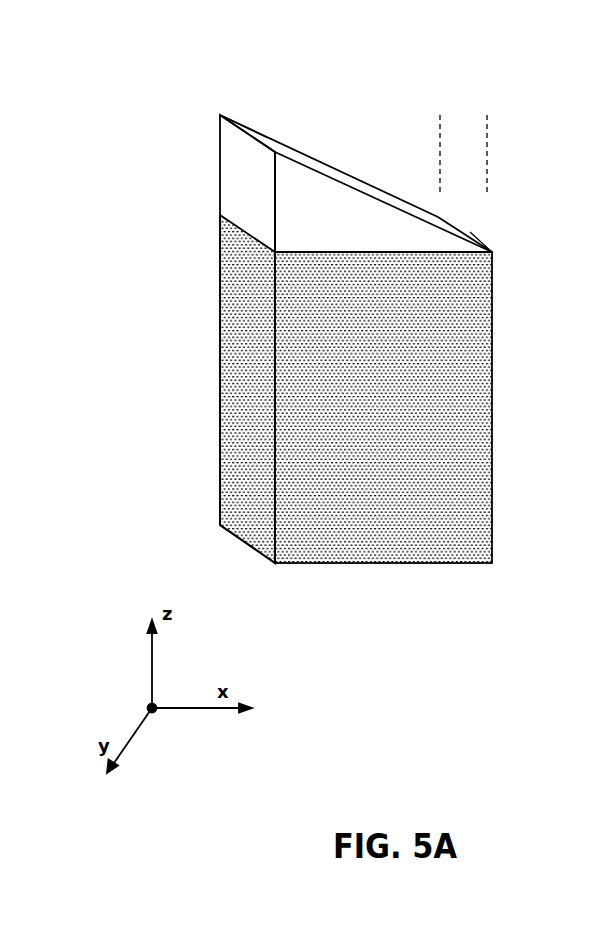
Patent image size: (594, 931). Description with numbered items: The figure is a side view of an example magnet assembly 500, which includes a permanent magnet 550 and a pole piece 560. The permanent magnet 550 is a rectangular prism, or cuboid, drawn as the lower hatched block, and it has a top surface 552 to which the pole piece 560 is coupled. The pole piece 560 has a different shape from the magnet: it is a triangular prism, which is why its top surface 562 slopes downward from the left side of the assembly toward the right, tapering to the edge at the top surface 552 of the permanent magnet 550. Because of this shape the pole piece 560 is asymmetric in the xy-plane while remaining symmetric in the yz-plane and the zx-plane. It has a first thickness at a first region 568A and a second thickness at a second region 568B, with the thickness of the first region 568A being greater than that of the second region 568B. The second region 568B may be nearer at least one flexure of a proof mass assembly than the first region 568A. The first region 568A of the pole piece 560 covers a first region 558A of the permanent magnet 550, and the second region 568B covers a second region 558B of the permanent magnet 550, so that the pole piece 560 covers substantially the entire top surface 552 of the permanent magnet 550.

The magnet assembly 500 is at (183, 140).
The permanent magnet 550 is at (402, 498).
The top surface 552 is at (465, 252).
The first region 558A is at (332, 258).
The second region 558B is at (487, 262).
The pole piece 560 is at (325, 228).
The top surface 562 is at (300, 158).
The first region 568A is at (268, 97).
The second region 568B is at (487, 102).